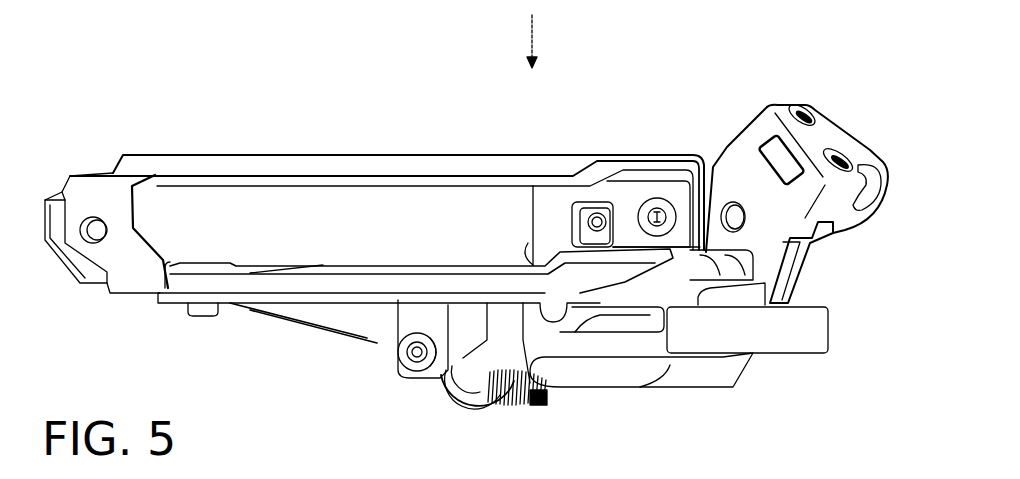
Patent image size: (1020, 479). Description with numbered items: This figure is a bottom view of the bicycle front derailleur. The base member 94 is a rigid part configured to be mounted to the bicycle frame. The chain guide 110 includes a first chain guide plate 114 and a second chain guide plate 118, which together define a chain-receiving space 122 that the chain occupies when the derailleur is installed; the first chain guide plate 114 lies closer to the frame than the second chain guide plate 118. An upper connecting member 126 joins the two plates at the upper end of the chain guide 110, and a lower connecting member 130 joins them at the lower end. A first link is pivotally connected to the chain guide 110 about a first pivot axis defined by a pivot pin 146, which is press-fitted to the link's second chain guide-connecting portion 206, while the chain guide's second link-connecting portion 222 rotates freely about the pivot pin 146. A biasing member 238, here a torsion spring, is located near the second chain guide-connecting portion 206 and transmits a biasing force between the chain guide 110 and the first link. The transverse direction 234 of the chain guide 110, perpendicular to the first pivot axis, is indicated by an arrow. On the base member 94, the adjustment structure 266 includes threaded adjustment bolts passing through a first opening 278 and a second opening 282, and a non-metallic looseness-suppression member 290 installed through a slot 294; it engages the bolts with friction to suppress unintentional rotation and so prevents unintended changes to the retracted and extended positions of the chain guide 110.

The base member 94 is at (800, 337).
The chain guide 110 is at (177, 157).
The first chain guide plate 114 is at (330, 282).
The second chain guide plate 118 is at (343, 157).
The chain-receiving space 122 is at (400, 207).
The upper connecting member 126 is at (582, 247).
The lower connecting member 130 is at (137, 283).
The pivot pin 146 is at (413, 367).
The second chain guide-connecting portion 206 is at (462, 377).
The second link-connecting portion 222 is at (410, 320).
The transverse direction 234 is at (530, 28).
The biasing member 238 is at (512, 405).
The adjustment structure 266 is at (738, 66).
The first opening 278 is at (800, 110).
The second opening 282 is at (837, 157).
The looseness-suppression member 290 is at (767, 158).
The slot 294 is at (758, 147).